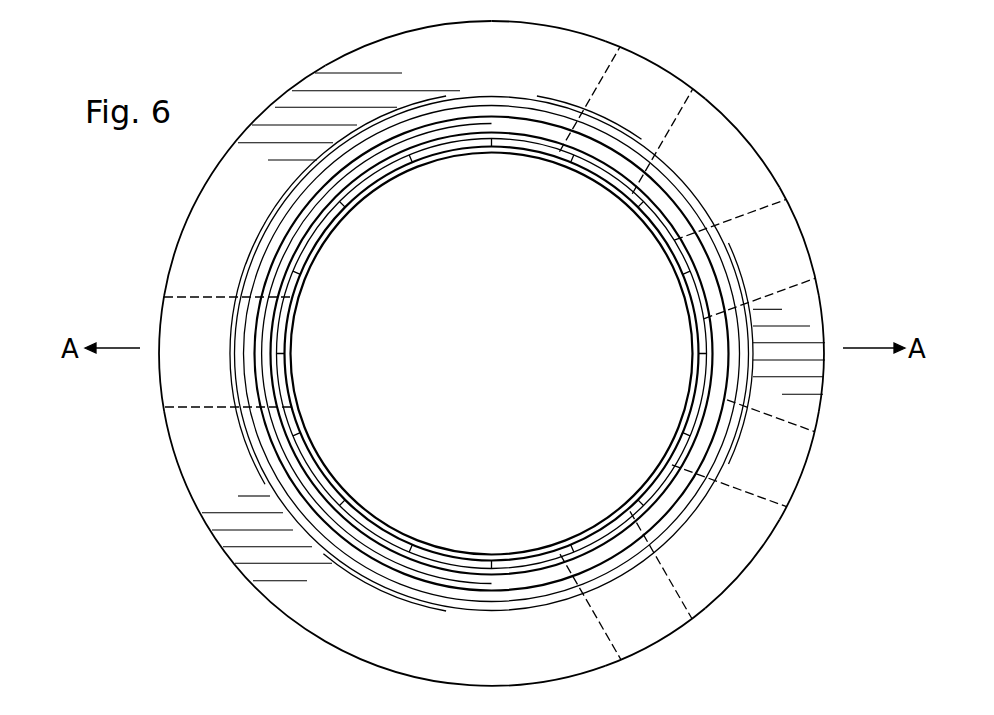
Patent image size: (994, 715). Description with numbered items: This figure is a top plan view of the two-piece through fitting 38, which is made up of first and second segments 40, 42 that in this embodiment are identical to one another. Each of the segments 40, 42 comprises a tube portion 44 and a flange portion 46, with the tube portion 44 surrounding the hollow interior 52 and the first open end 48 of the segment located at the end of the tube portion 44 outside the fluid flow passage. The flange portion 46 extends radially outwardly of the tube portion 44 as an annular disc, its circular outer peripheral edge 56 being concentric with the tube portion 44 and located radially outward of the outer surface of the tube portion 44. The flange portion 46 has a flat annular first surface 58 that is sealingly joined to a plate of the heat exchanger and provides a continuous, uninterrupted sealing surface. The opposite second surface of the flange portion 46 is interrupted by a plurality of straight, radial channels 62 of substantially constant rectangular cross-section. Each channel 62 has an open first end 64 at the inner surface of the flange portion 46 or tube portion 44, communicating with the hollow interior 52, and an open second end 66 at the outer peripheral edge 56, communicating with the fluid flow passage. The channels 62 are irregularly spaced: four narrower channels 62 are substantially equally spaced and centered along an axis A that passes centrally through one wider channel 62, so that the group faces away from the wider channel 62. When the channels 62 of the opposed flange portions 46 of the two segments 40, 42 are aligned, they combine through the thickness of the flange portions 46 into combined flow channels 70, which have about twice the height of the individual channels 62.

The two-piece through fitting 38 is at (852, 197).
The first segment 40 is at (382, 553).
The second segment 42 is at (705, 0).
The tube portion 44 is at (280, 447).
The flange portion 46 is at (733, 533).
The first open end 48 is at (298, 0).
The hollow interior 52 is at (473, 362).
The outer peripheral edge 56 is at (827, 368).
The first surface 58 is at (220, 233).
The channel 62 is at (657, 100).
The open first end 64 is at (287, 342).
The open second end 66 is at (652, 62).
The combined flow channel 70 is at (185, 335).